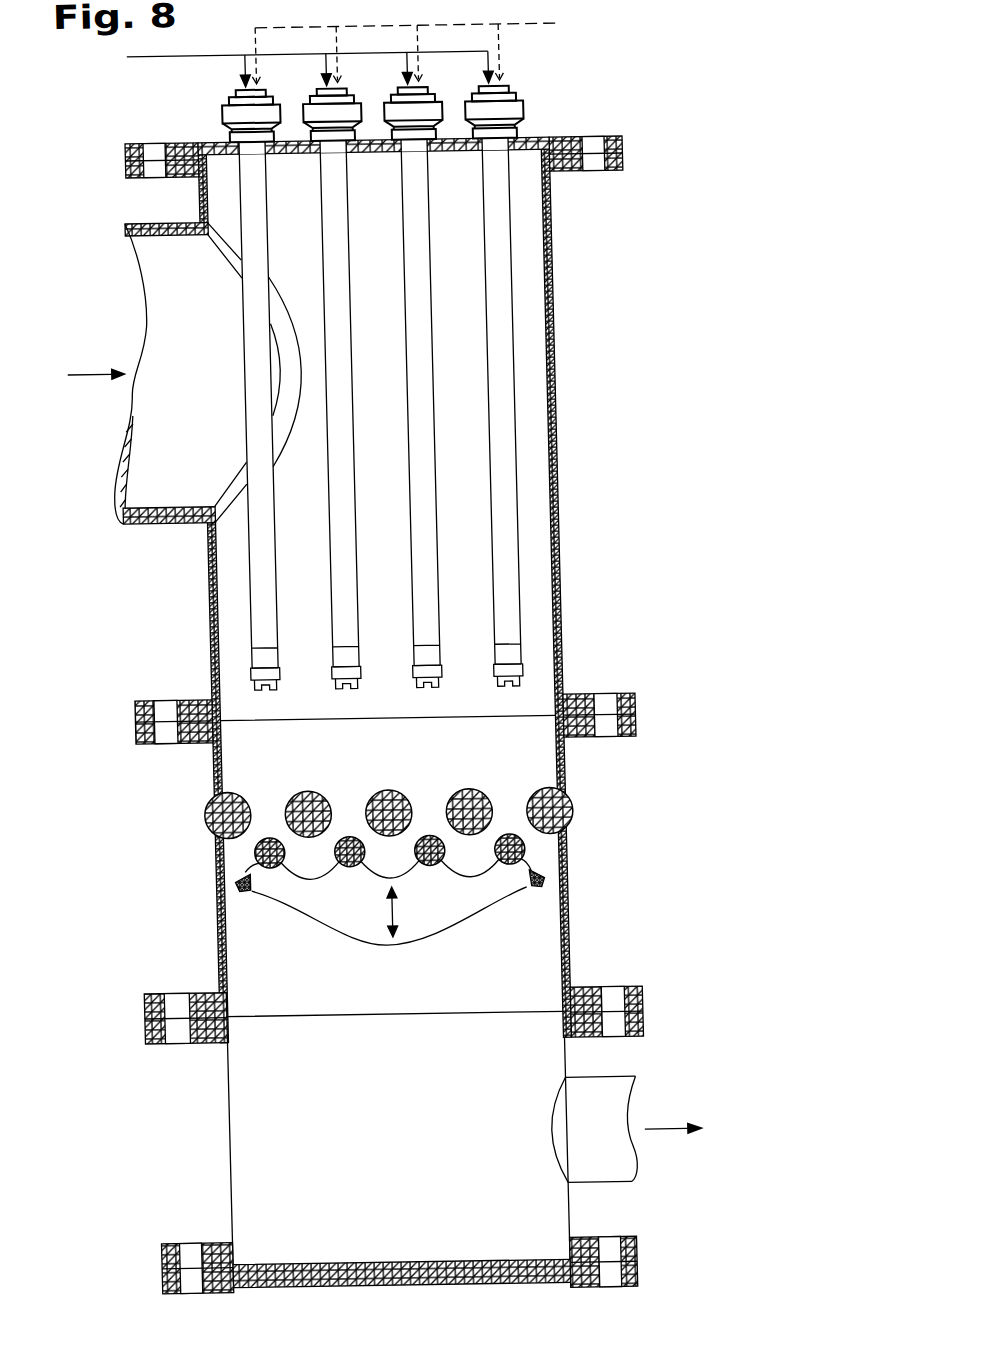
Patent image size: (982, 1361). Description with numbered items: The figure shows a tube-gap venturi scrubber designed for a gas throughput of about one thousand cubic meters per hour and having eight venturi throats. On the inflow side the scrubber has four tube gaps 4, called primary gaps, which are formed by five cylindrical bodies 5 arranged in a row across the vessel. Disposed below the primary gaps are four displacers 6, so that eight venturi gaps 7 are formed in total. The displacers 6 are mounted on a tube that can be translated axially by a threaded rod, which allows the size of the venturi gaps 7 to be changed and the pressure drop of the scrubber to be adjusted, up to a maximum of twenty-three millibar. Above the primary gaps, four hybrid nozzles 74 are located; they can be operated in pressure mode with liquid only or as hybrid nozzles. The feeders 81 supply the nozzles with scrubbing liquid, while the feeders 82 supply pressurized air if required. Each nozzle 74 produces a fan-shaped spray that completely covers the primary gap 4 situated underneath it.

The tube gap 4 is at (504, 812).
The cylindrical body 5 is at (552, 816).
The displacer 6 is at (513, 864).
The venturi gap 7 is at (520, 839).
The hybrid nozzle 74 is at (513, 545).
The feeder 81 is at (179, 53).
The feeder 82 is at (545, 29).